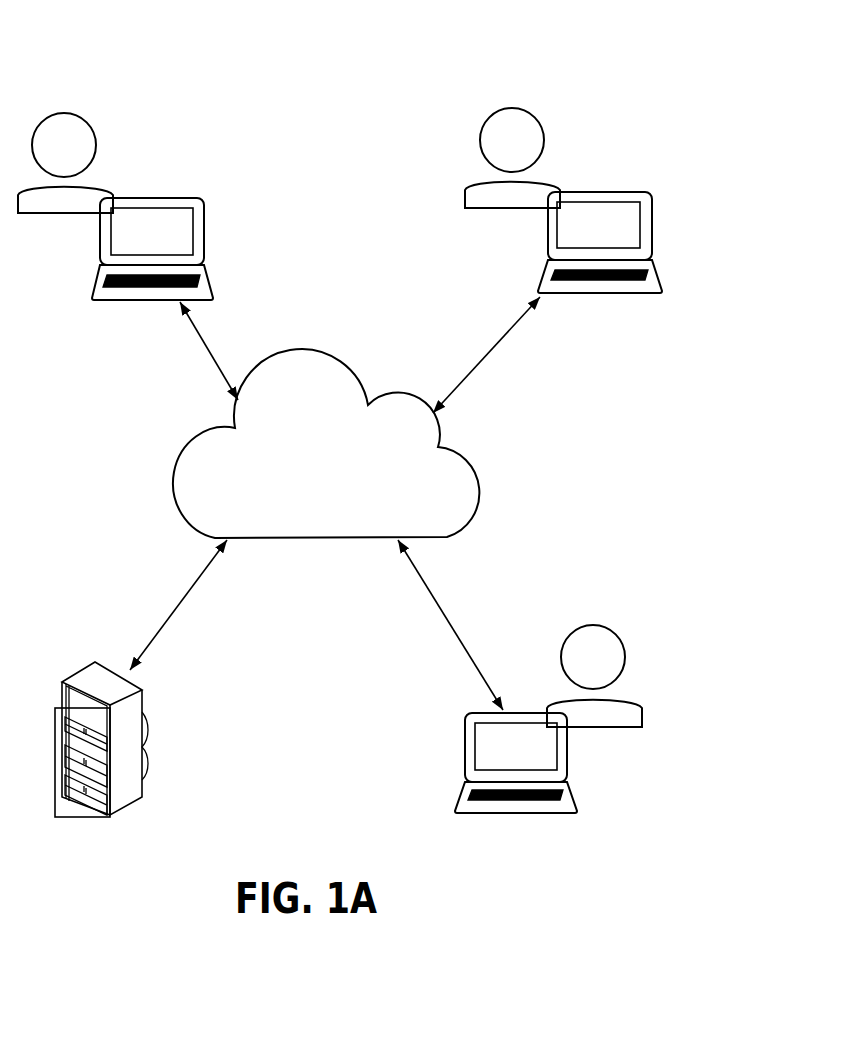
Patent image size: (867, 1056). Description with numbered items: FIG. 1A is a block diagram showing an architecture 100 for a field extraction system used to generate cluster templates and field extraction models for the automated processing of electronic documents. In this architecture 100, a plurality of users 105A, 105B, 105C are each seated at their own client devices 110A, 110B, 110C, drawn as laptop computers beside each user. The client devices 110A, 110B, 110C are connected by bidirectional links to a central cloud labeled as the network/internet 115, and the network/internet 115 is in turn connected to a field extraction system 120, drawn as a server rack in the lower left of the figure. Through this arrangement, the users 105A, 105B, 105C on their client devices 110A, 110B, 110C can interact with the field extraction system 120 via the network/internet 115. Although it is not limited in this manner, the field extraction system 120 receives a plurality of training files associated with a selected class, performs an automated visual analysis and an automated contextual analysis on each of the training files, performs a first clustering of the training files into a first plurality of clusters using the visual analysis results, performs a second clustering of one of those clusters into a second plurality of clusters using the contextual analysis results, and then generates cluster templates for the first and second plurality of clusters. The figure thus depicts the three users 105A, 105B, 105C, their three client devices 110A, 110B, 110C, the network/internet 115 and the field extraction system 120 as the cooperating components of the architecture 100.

The architecture 100 is at (712, 41).
The user 105A is at (97, 143).
The user 105B is at (542, 137).
The user 105C is at (625, 653).
The client device 110A is at (204, 212).
The client device 110B is at (652, 203).
The client device 110C is at (578, 802).
The network/internet 115 is at (318, 363).
The field extraction system 120 is at (98, 660).